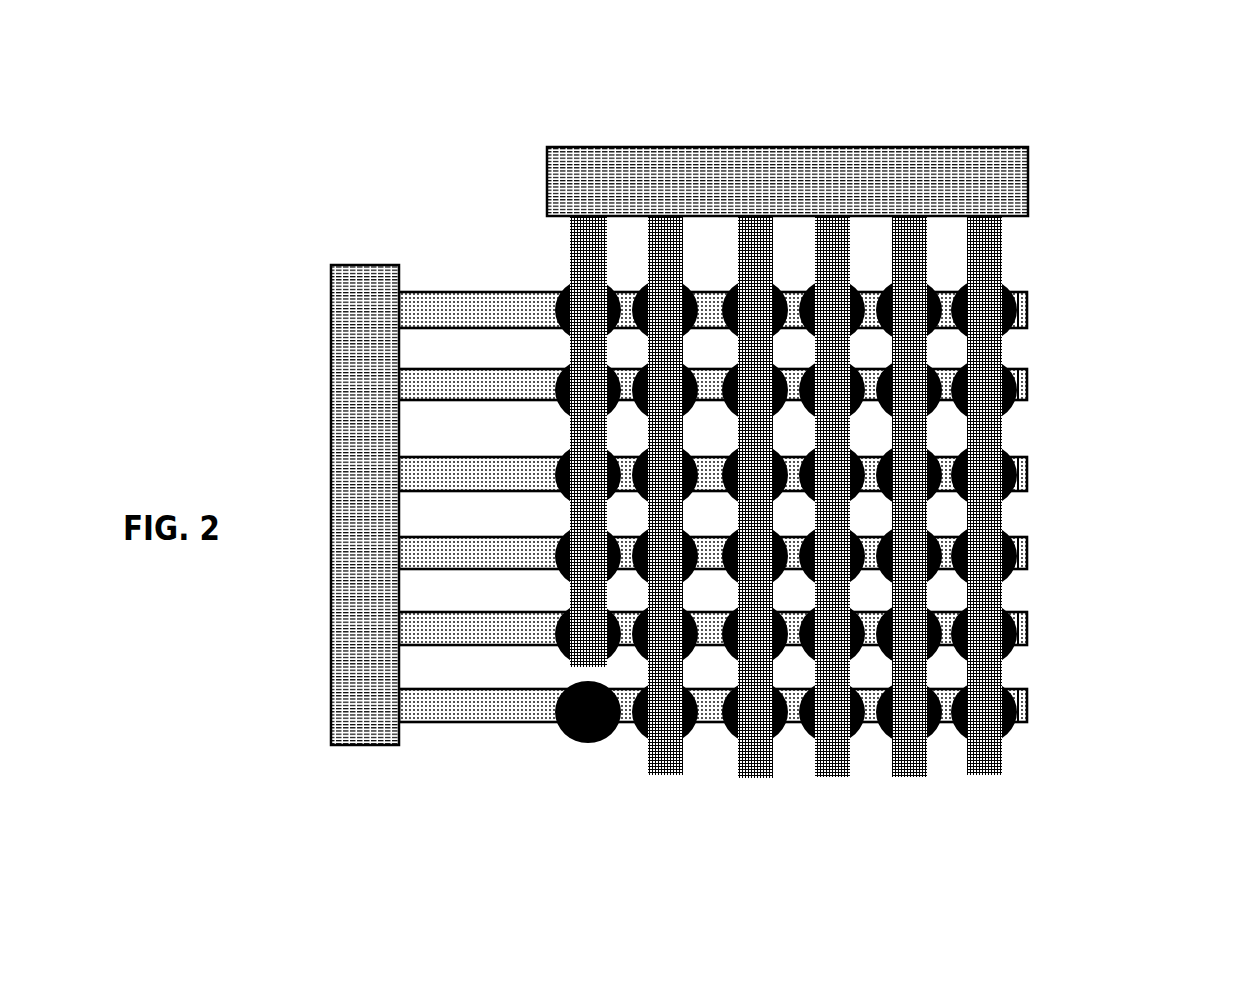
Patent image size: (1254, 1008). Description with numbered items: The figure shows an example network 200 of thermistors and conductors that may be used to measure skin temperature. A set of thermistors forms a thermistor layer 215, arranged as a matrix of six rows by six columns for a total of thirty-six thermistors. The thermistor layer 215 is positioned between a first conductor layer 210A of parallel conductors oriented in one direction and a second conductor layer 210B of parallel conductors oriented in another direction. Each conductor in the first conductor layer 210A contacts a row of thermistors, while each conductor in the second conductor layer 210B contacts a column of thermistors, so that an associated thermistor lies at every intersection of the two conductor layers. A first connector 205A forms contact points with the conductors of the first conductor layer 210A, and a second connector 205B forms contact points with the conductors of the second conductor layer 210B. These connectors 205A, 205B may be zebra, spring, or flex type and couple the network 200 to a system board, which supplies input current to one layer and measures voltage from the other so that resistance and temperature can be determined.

The network 200 is at (306, 96).
The first connector 205A is at (407, 158).
The second connector 205B is at (533, 190).
The first conductor layer 210A is at (477, 725).
The second conductor layer 210B is at (985, 782).
The thermistor layer 215 is at (1023, 470).